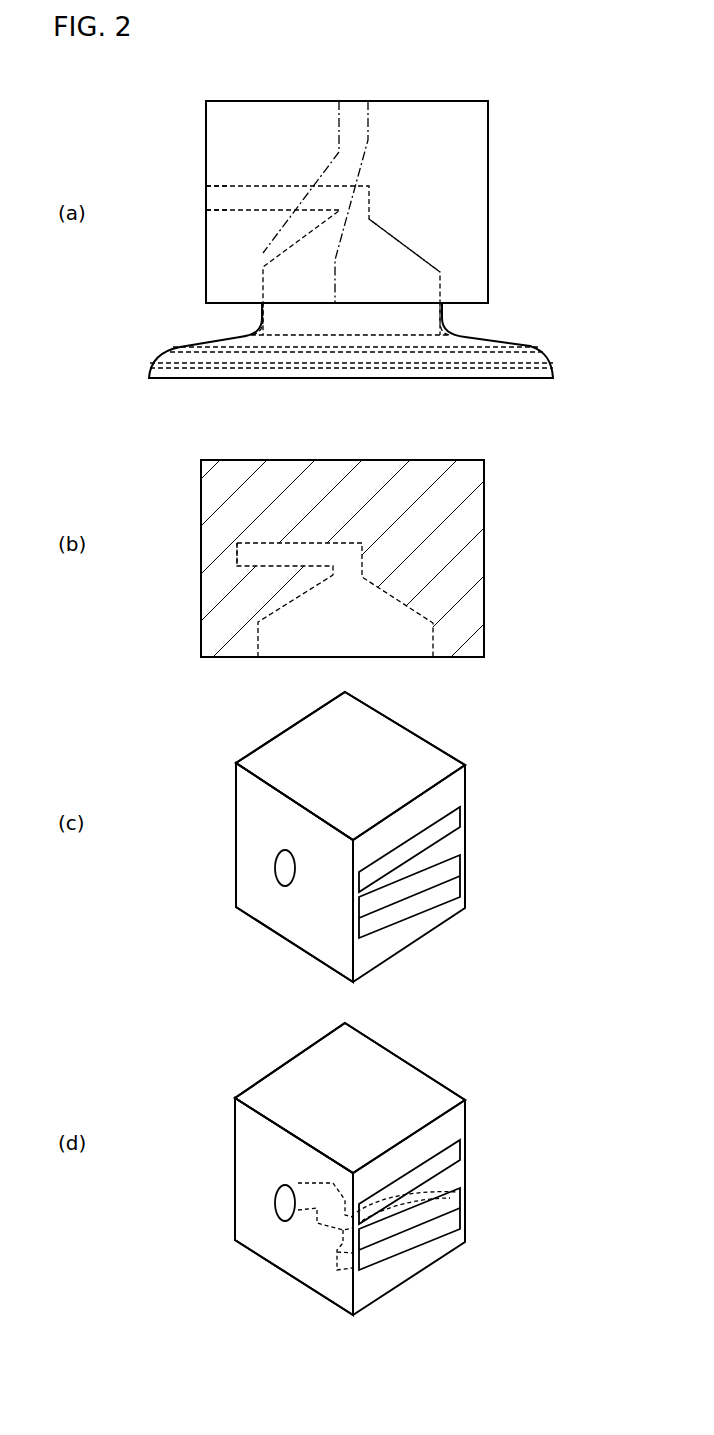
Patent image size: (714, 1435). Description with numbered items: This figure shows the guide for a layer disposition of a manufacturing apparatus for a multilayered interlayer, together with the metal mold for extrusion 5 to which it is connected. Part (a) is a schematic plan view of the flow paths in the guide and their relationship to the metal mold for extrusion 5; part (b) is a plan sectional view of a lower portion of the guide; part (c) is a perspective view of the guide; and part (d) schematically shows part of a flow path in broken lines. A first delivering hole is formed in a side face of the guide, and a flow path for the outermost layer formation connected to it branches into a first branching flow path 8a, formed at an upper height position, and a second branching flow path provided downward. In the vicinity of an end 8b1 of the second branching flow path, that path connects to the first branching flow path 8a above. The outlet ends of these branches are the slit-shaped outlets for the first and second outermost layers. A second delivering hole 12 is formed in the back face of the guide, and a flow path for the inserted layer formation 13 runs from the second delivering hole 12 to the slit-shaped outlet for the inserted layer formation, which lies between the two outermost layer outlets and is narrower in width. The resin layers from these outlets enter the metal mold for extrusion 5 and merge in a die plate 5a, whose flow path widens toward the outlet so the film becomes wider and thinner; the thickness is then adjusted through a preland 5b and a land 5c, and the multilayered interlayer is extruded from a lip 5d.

The metal mold for extrusion 5 is at (549, 357).
The die plate 5a is at (441, 315).
The preland 5b is at (520, 346).
The land 5c is at (528, 371).
The lip 5d is at (395, 379).
The first branching flow path 8a is at (382, 228).
The end of the second branching flow path 8b1 is at (235, 560).
The second delivering hole 12 is at (353, 101).
The flow path for the inserted layer formation 13 is at (370, 140).